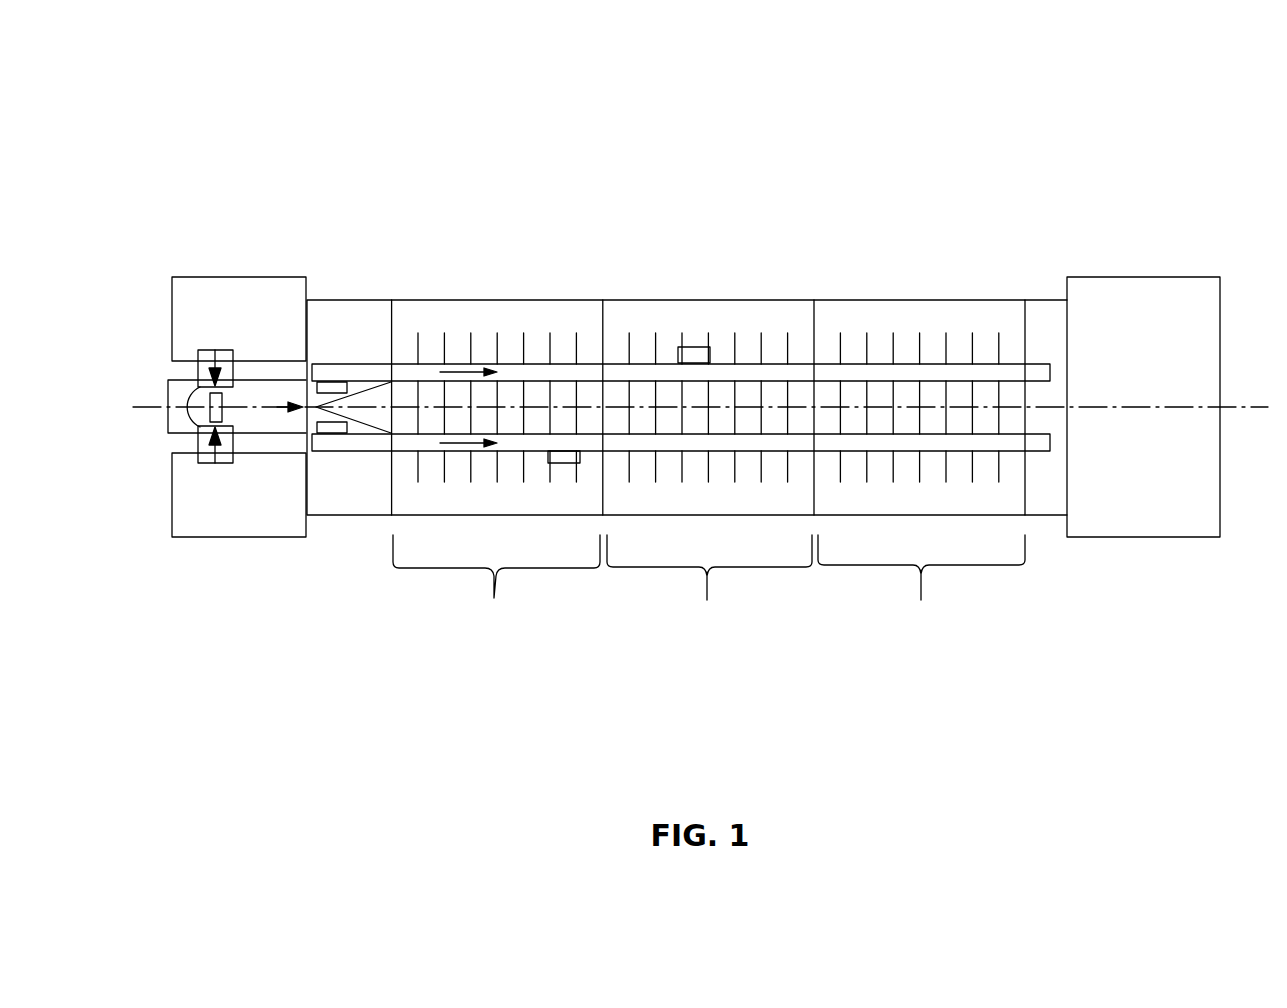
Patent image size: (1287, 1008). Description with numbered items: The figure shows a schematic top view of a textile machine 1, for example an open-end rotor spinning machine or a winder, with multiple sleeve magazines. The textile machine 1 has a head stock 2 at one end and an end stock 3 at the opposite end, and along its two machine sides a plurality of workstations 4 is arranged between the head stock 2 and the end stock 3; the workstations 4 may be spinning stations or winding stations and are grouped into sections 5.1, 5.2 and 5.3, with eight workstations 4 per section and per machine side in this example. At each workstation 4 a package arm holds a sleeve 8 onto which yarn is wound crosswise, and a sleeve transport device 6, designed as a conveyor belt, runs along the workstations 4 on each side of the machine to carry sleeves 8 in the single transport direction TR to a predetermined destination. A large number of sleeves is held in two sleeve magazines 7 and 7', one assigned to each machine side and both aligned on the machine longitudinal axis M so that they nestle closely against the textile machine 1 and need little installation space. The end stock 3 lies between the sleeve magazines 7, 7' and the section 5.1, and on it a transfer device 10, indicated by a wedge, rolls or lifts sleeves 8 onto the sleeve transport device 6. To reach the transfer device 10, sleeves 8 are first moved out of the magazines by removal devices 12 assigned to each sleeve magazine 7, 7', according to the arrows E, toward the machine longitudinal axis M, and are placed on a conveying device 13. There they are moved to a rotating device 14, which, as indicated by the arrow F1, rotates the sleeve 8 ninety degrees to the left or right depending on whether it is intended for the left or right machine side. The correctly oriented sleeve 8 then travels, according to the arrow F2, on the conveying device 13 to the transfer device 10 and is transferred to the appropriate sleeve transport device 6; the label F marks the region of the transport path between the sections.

The textile machine 1 is at (713, 225).
The head stock 2 is at (1150, 300).
The end stock 3 is at (335, 313).
The workstations 4 is at (857, 345).
The section 5.1 is at (496, 596).
The section 5.2 is at (709, 597).
The section 5.3 is at (921, 597).
The sleeve transport device 6 is at (995, 370).
The sleeve magazine 7 is at (234, 536).
The sleeve magazine 7' is at (239, 210).
The sleeve 8 is at (322, 382).
The transfer device 10 is at (378, 403).
The removal device 12 is at (212, 370).
The conveying device 13 is at (165, 432).
The rotating device 14 is at (210, 413).
The arrows E is at (218, 350).
The conveying direction F is at (626, 610).
The arrow F1 is at (198, 392).
The arrow F2 is at (268, 405).
The arrow direction TR is at (452, 370).
The machine longitudinal axis M is at (1253, 407).